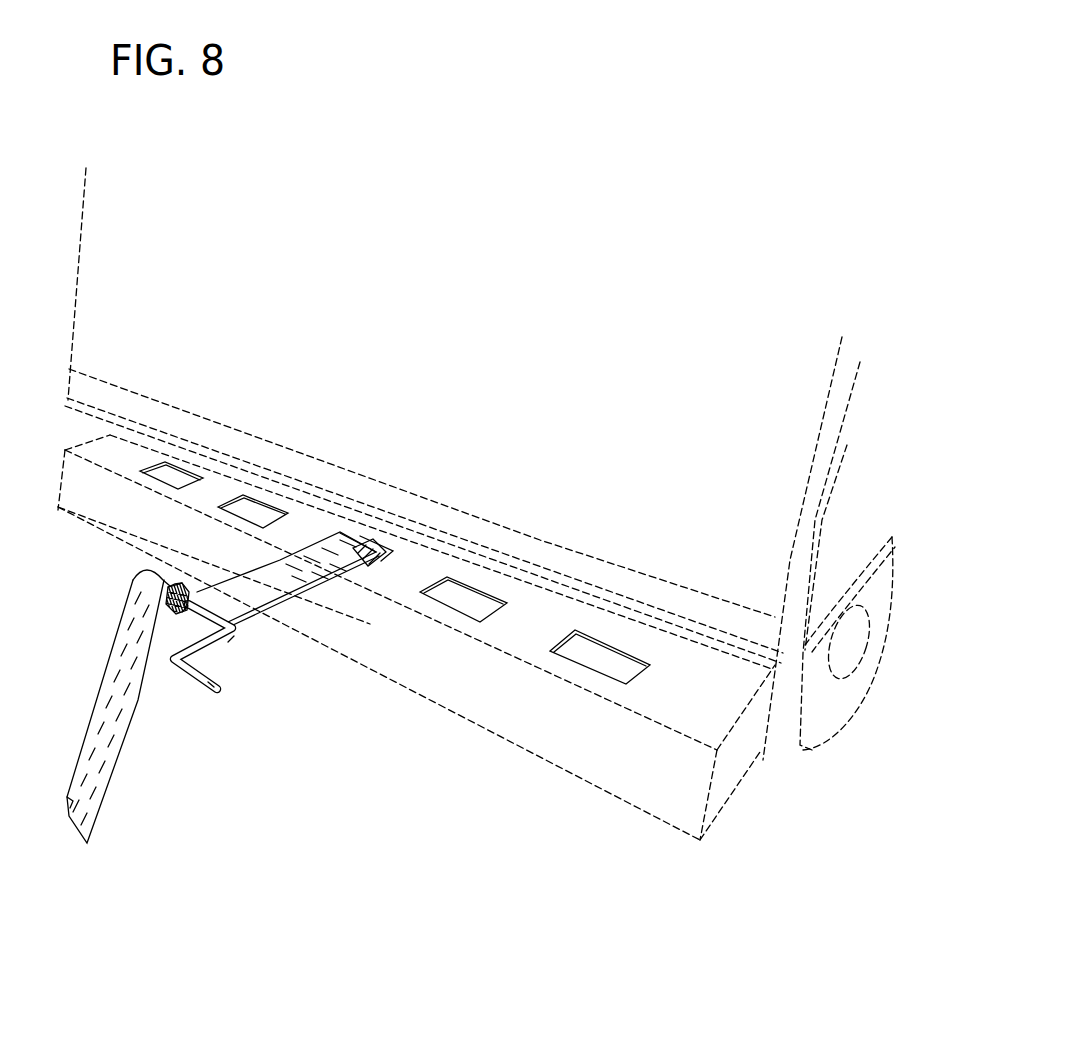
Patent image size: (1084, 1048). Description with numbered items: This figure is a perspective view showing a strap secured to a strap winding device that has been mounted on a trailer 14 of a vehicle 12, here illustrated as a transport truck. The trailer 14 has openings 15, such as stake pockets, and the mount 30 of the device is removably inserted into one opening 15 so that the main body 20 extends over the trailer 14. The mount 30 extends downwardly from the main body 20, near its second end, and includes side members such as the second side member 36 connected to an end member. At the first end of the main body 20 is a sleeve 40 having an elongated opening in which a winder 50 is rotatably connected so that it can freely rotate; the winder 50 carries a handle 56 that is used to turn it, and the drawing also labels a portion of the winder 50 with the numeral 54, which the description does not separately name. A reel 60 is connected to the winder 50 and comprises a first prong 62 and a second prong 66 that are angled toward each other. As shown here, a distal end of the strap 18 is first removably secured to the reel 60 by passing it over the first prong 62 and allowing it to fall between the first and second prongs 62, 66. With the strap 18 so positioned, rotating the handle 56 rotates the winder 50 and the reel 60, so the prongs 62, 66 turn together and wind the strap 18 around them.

The vehicle 12 is at (818, 453).
The trailer 14 is at (122, 457).
The opening 15 is at (377, 557).
The strap 18 is at (100, 780).
The main body 20 is at (276, 580).
The mount 30 is at (372, 567).
The second side member 36 is at (366, 566).
The sleeve 40 is at (188, 603).
The winder 50 is at (234, 637).
The hook bend 54 is at (230, 640).
The handle 56 is at (197, 688).
The reel 60 is at (186, 588).
The first prong 62 is at (170, 586).
The second prong 66 is at (172, 586).